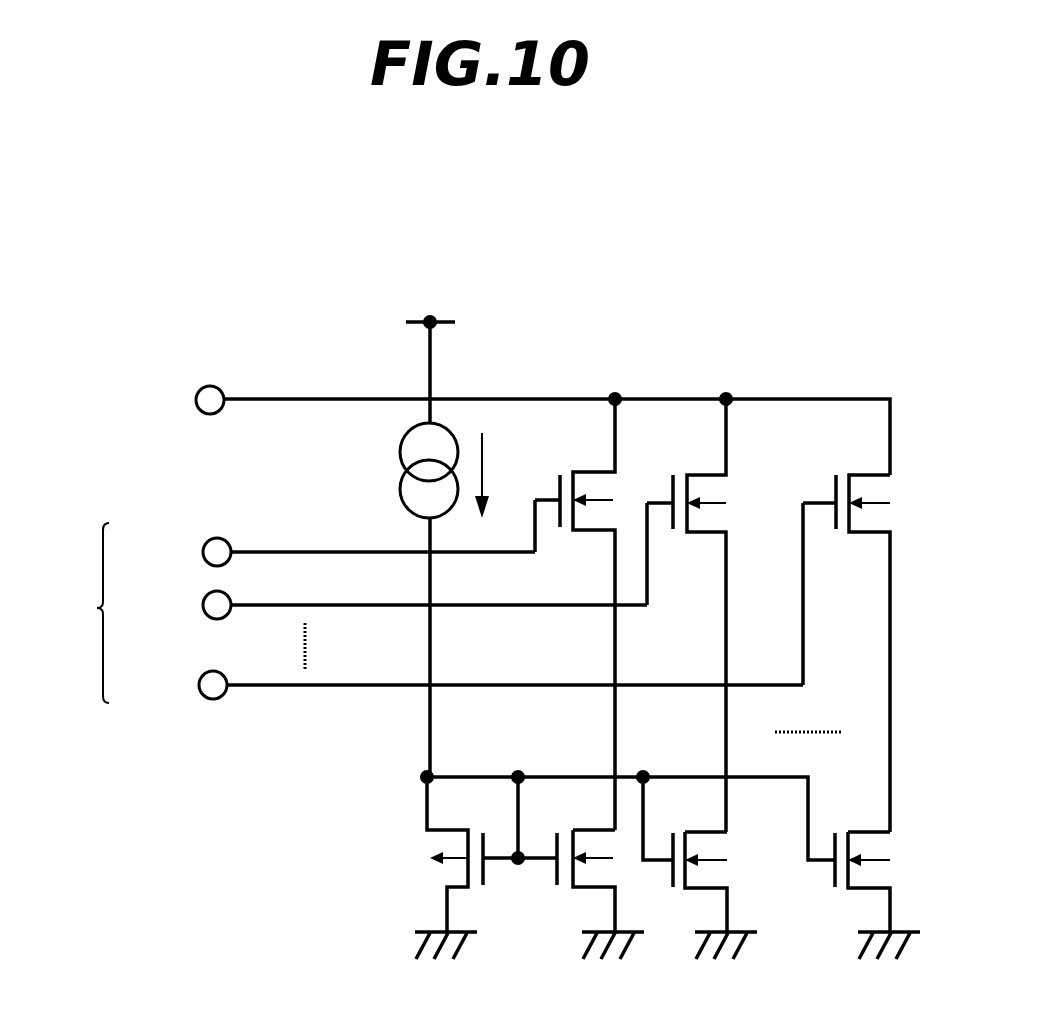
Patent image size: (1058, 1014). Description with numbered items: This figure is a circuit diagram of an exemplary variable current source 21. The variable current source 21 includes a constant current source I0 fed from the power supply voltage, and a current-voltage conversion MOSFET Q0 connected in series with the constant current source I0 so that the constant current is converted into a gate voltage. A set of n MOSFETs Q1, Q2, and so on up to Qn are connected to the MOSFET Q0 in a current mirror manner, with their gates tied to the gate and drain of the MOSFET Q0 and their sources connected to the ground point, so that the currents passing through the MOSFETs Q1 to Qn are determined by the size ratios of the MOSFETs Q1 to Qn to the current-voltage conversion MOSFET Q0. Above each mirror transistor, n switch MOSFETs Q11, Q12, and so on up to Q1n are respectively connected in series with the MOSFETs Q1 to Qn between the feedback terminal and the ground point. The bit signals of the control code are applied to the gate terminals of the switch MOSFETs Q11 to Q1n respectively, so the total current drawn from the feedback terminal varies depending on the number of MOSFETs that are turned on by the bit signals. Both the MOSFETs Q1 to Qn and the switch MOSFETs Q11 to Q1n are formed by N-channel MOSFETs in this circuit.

The variable current source 21 is at (873, 306).
The constant current source I0 is at (419, 470).
The switch MOSFET Q11 is at (564, 614).
The switch MOSFET Q12 is at (720, 615).
The switch MOSFET Q1n is at (880, 653).
The current-voltage conversion MOSFET Q0 is at (471, 868).
The MOSFET Q1 is at (576, 894).
The MOSFET Q2 is at (715, 868).
The MOSFET Qn is at (888, 895).